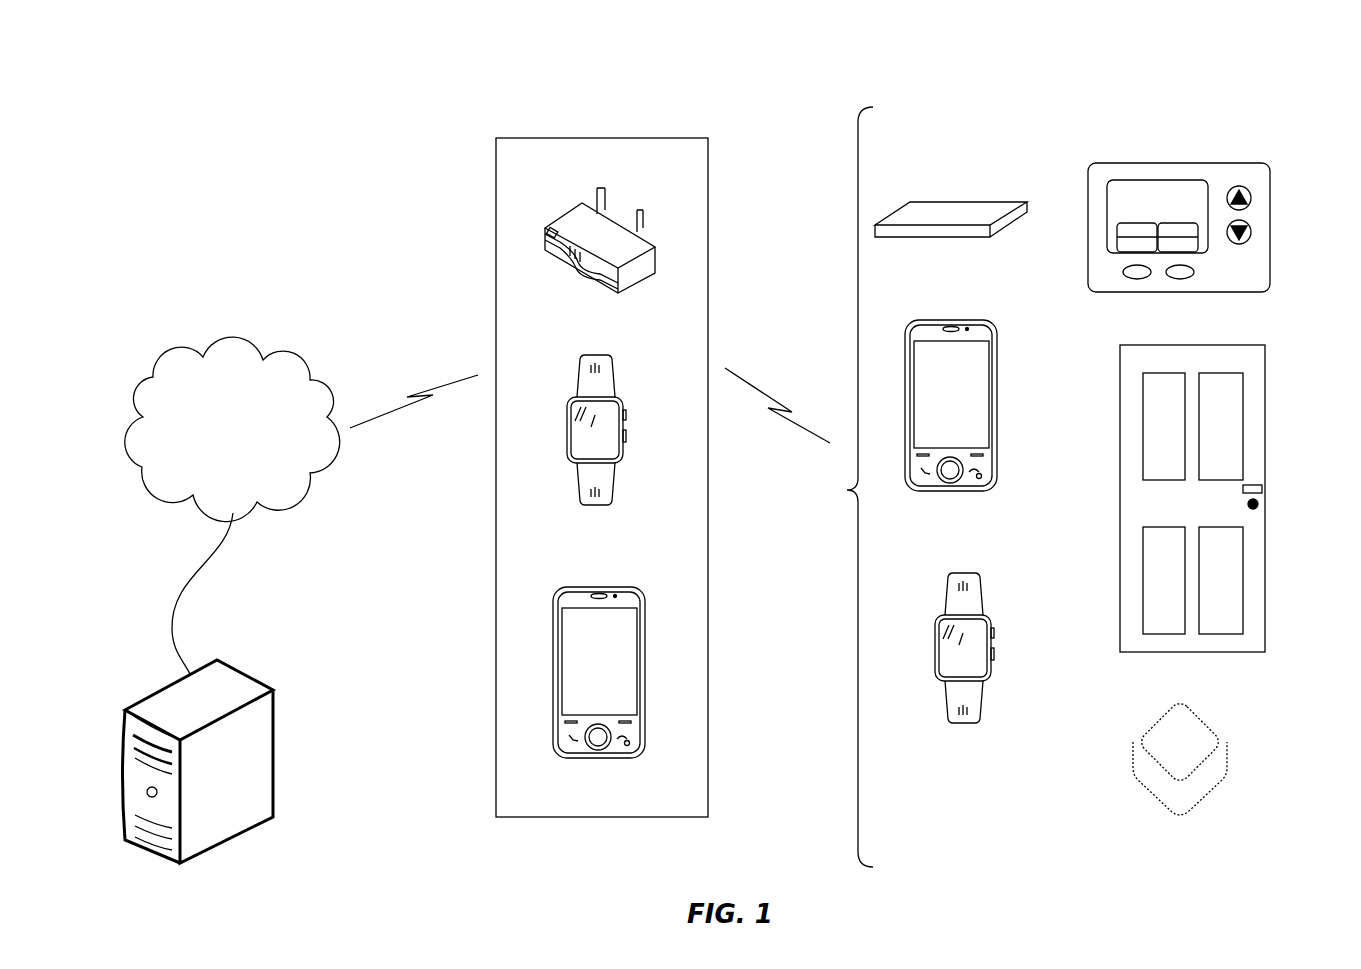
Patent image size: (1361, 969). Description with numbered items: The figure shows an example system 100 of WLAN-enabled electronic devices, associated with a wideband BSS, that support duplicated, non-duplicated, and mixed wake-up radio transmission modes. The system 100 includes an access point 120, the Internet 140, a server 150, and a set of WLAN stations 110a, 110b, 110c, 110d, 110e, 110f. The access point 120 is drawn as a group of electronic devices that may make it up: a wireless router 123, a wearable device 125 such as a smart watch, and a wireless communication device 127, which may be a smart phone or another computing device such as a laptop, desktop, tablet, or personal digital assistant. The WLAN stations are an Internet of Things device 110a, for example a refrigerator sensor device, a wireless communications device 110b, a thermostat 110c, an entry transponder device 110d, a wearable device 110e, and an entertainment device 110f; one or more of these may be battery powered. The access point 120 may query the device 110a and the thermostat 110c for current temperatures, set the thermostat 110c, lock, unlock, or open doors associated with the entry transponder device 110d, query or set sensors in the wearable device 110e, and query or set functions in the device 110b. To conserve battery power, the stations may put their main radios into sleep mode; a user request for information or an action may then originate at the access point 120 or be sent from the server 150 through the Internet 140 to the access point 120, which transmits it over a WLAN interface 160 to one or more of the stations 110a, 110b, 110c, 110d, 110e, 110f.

The system 100 is at (1255, 57).
The Internet of Things (IoT) device 110a is at (942, 202).
The wireless communications device 110b is at (965, 322).
The thermostat 110c is at (1233, 163).
The entry transponder device 110d is at (1262, 487).
The wearable device 110e is at (983, 585).
The entertainment device 110f is at (1192, 762).
The access point (AP) 120 is at (620, 138).
The wireless router 123 is at (553, 224).
The wearable device 125 is at (614, 373).
The wireless communication device 127 is at (647, 736).
The Internet 140 is at (232, 429).
The server 150 is at (262, 682).
The WLAN interface 160 is at (766, 400).